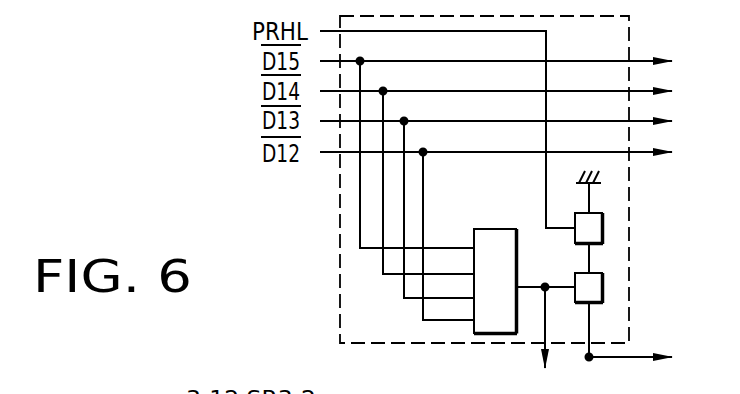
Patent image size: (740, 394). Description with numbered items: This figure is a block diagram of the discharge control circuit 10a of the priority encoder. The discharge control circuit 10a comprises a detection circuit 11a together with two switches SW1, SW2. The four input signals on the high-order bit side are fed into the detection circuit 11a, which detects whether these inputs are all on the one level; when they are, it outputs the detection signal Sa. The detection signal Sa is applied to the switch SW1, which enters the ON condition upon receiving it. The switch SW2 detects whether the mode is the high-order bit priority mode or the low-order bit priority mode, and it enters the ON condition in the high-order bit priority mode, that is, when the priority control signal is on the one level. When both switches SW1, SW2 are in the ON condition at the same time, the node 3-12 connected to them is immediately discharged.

The discharge control circuit 10a is at (340, 313).
The detection circuit 11a is at (488, 228).
The switch SW1 is at (593, 291).
The switch SW2 is at (593, 230).
The detection signal Sa is at (545, 339).
The node 3-12 is at (589, 361).